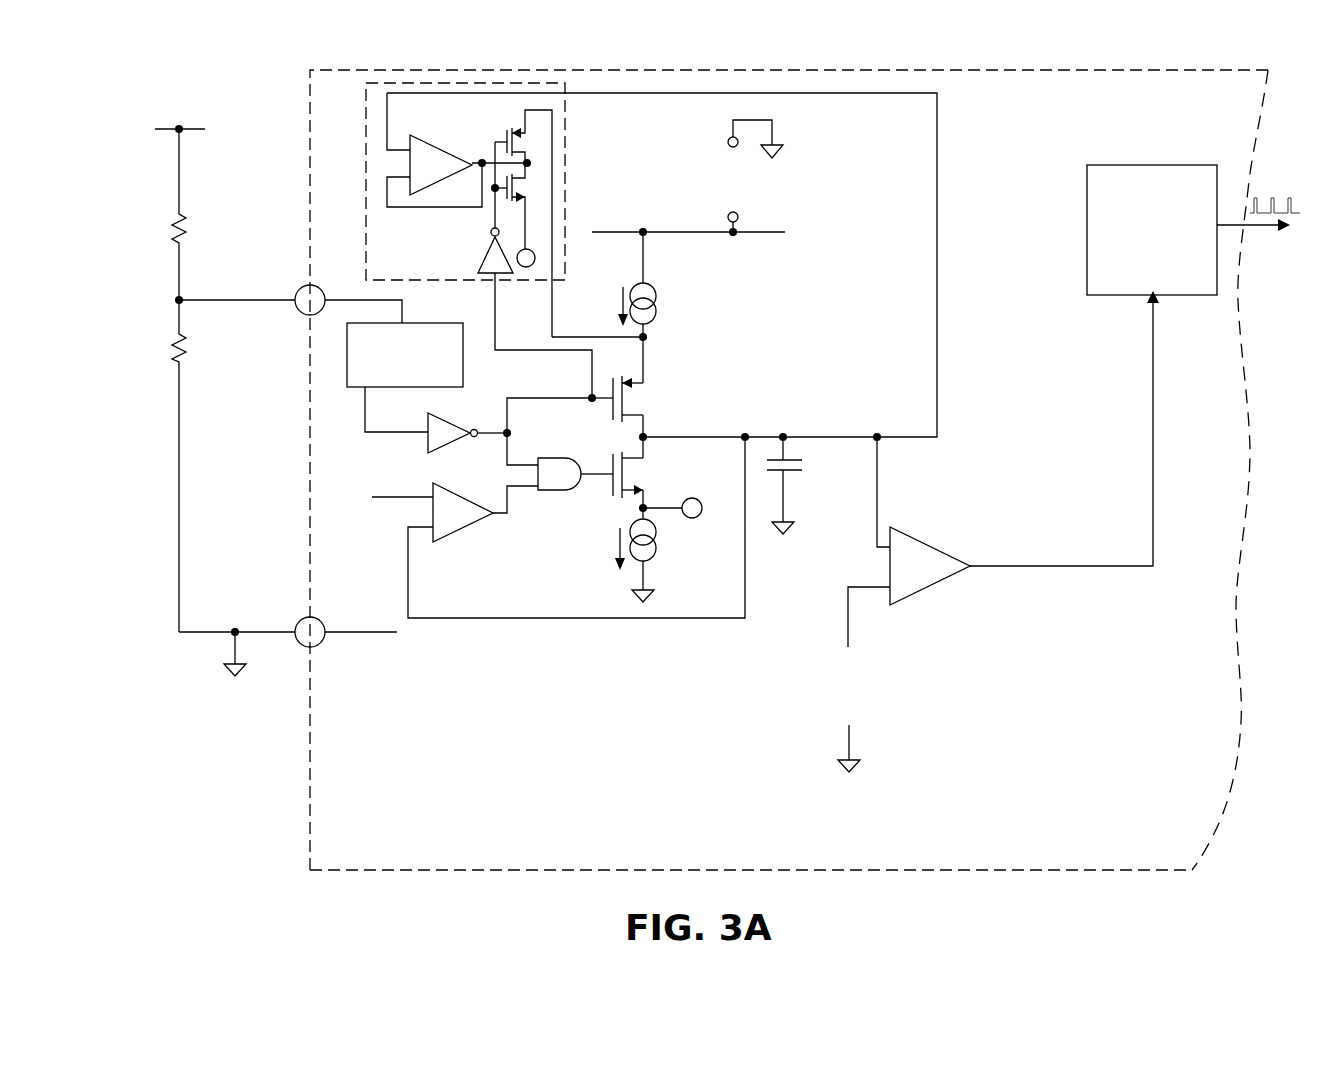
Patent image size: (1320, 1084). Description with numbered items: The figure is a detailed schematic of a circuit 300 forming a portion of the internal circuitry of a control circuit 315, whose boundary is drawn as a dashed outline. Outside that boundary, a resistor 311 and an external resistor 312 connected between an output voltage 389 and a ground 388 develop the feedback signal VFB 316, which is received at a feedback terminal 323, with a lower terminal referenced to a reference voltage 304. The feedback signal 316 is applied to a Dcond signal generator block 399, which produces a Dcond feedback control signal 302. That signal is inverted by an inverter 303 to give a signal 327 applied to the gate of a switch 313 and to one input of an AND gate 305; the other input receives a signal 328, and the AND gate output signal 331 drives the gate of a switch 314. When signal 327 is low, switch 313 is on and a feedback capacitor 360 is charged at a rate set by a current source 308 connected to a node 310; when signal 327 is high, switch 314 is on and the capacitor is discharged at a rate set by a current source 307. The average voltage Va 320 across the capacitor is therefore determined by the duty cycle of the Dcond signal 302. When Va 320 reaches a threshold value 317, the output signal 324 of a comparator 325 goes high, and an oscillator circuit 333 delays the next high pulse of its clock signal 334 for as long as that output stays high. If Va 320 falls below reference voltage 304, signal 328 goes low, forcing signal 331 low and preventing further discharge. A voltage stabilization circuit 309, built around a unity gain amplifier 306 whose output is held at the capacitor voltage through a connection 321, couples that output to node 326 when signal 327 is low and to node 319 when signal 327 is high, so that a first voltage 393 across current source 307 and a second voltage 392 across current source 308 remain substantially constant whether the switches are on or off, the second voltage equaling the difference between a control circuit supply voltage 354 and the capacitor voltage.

The circuit 300 is at (172, 92).
The output voltage Vout 389 is at (128, 262).
The resistor 311 is at (192, 226).
The external resistor 312 is at (190, 352).
The feedback signal VFB 316 is at (241, 464).
The feedback terminal 323 is at (294, 297).
The reference voltage Vref2 304 is at (385, 588).
The ground 388 is at (245, 682).
The Dcond signal generator block 399 is at (463, 360).
The Dcond feedback control signal 302 is at (372, 447).
The inverter 303 is at (438, 455).
The signal 328 is at (502, 504).
The AND gate 305 is at (543, 497).
The current source 307 is at (590, 542).
The unity gain amplifier 306 is at (452, 150).
The voltage stabilization circuit 309 is at (567, 152).
The current source 308 is at (612, 294).
The supply node 310 is at (652, 229).
The second voltage V2 392 is at (692, 297).
The node 319 is at (652, 364).
The control circuit supply voltage 354 is at (768, 175).
The connection 321 is at (945, 232).
The switch 313 is at (650, 405).
The signal 327 is at (572, 407).
The AND gate output signal 331 is at (590, 466).
The switch 314 is at (648, 480).
The node 326 is at (694, 525).
The first voltage V1 393 is at (657, 572).
The feedback capacitor 360 is at (790, 455).
The voltage Va 320 is at (835, 455).
The comparator 325 is at (920, 536).
The output signal 324 is at (1022, 620).
The threshold value Vref1 317 is at (794, 692).
The oscillator circuit 333 is at (1205, 297).
The clock signal 334 is at (1283, 232).
The control circuit 315 is at (390, 872).